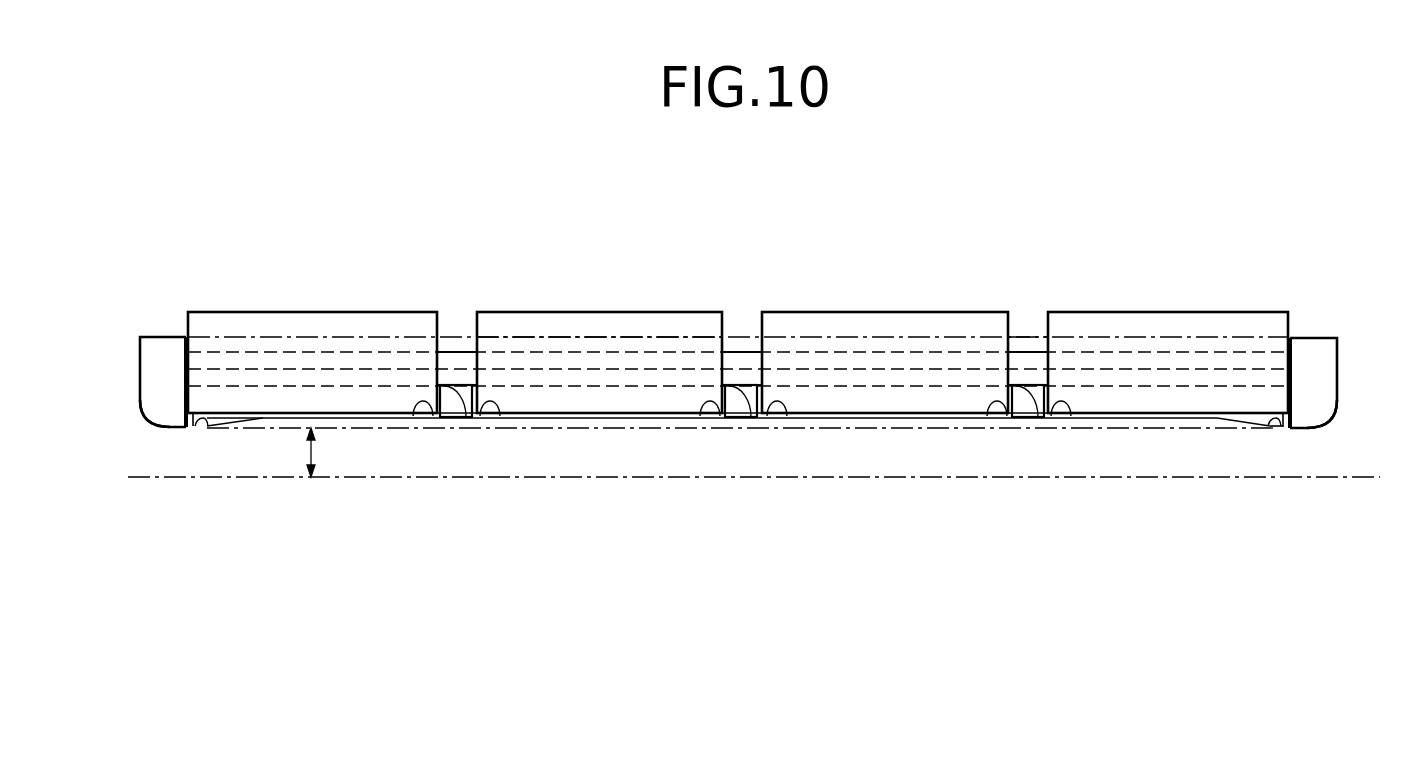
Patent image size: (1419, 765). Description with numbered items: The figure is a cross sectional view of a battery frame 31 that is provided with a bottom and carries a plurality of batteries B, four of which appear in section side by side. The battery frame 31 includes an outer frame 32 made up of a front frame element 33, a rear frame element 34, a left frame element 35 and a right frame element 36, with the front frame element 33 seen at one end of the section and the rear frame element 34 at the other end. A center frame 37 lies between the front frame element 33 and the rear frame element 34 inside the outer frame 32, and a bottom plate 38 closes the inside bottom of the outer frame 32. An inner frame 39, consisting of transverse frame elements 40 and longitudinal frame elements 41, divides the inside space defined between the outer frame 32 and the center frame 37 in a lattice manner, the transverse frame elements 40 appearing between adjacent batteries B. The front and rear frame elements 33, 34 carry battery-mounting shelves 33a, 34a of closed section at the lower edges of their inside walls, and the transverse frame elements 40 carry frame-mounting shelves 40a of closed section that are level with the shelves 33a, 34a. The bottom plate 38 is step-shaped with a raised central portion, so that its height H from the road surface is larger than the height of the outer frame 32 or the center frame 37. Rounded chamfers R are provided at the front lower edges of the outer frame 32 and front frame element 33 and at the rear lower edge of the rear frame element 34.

The battery frame 31 is at (134, 348).
The outer frame 32 is at (450, 339).
The front frame element 33 is at (140, 383).
The battery-mounting shelf 33a is at (200, 430).
The rear frame element 34 is at (1338, 362).
The battery-mounting shelf 34a is at (1272, 430).
The left frame element 35 is at (1080, 293).
The right frame element 36 is at (1035, 332).
The center frame 37 is at (630, 370).
The bottom plate 38 is at (596, 420).
The inner frame 39 is at (736, 339).
The transverse frame element 40 is at (462, 417).
The frame-mounting shelf 40a is at (416, 405).
The longitudinal frame element 41 is at (1023, 338).
The battery B is at (320, 312).
The rounded chamfer R is at (144, 416).
The height of the bottom plate H is at (754, 452).